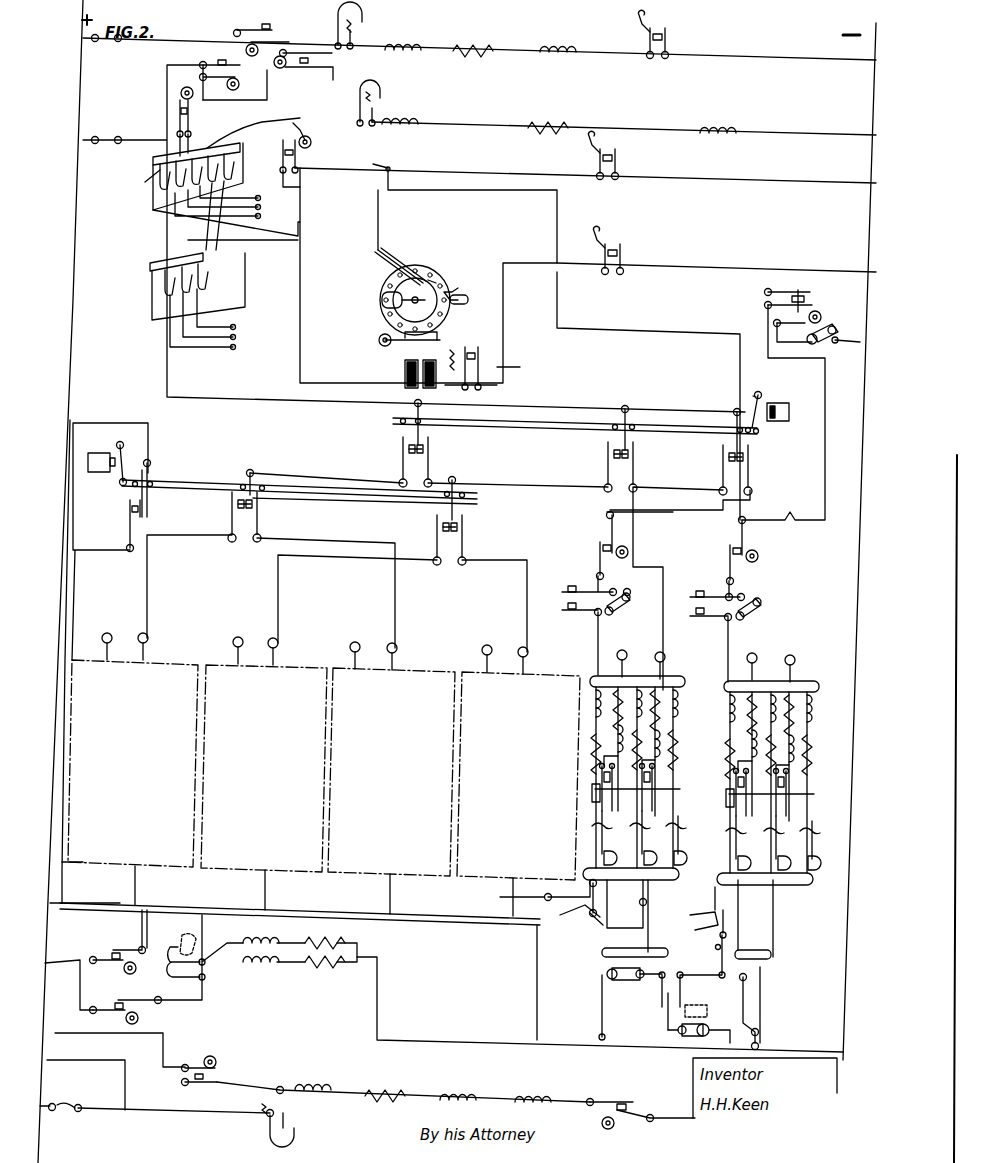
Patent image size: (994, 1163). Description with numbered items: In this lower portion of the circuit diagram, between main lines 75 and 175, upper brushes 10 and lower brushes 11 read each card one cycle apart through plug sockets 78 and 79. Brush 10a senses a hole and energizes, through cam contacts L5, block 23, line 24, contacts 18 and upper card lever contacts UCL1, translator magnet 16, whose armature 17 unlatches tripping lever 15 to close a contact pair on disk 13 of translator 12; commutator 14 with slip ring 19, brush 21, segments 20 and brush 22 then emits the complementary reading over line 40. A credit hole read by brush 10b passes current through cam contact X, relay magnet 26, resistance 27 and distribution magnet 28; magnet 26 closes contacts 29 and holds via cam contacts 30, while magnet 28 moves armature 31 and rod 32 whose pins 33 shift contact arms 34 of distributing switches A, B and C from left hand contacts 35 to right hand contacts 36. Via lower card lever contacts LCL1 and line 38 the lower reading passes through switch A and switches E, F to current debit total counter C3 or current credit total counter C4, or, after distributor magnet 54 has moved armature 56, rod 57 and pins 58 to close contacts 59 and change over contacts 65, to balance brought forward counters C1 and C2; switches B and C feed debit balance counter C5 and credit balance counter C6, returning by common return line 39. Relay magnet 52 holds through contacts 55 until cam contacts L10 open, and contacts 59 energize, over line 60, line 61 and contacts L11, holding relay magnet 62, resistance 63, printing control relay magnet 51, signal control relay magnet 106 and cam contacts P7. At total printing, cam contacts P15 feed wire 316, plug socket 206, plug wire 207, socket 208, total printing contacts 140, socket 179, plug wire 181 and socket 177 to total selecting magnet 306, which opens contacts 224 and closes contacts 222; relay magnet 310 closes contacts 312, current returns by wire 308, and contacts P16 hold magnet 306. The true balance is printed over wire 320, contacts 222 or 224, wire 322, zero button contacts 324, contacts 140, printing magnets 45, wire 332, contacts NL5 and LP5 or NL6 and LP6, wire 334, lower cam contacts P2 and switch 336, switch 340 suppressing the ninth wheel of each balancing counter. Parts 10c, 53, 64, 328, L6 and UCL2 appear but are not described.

The upper set of card reading brushes 10 is at (153, 157).
The brush 10a is at (143, 182).
The brush 10b is at (226, 140).
The key relay lead 10c is at (274, 122).
The lower set of card reading brushes 11 is at (150, 265).
The translator 12 is at (393, 305).
The disk 13 is at (450, 290).
The commutator 14 is at (392, 292).
The contact tripping lever 15 is at (428, 336).
The translator magnet 16 is at (402, 375).
The armature 17 is at (380, 338).
The contacts 18 is at (489, 368).
The slip ring 19 is at (432, 280).
The insulated segments 20 is at (440, 282).
The brush 21 is at (380, 258).
The brush 22 is at (398, 262).
The block 23 is at (211, 258).
The line 24 is at (302, 232).
The relay magnet 26 is at (405, 118).
The resistance 27 is at (548, 122).
The distribution magnet 28 is at (791, 392).
The contacts 29 is at (382, 95).
The cam contacts 30 is at (224, 60).
The armature 31 is at (754, 392).
The rod 32 is at (690, 425).
The pins 33 is at (633, 408).
The movable contact arms 34 is at (675, 437).
The left hand contact 35 is at (723, 465).
The right hand contact 36 is at (768, 466).
The line 38 is at (390, 160).
The common return line 39 is at (330, 898).
The line 40 is at (640, 331).
The printing magnets 45 is at (770, 695).
The printing control relay magnet 51 is at (465, 1094).
The relay magnet 52 is at (400, 46).
The resistor 53 is at (473, 41).
The distributor magnet 54 is at (99, 452).
The relay contacts 55 is at (364, 16).
The armature 56 is at (128, 460).
The rod 57 is at (200, 484).
The pins 58 is at (150, 488).
The contacts 59 is at (128, 498).
The line 60 is at (53, 870).
The line 61 is at (53, 887).
The holding relay magnet 62 is at (318, 1085).
The resistance 63 is at (385, 1090).
The relay 64 is at (296, 1122).
The contacts 65 is at (345, 504).
The main line 75 is at (40, 1128).
The plug sockets 78 is at (262, 216).
The plug sockets 79 is at (236, 347).
The signal control relay magnet 106 is at (545, 1095).
The total printing contacts 140 is at (790, 815).
The main line 175 is at (843, 922).
The socket 177 is at (639, 902).
The socket 179 is at (645, 805).
The plug wire 181 is at (650, 843).
The plug socket 206 is at (526, 892).
The plug wire 207 is at (582, 855).
The plug socket 208 is at (582, 838).
The contacts 222 is at (716, 948).
The contacts 224 is at (660, 1015).
The total selecting magnet 306 is at (695, 995).
The wire 308 is at (380, 985).
The relay magnet 310 is at (182, 930).
The contacts 312 is at (160, 975).
The wire 316 is at (60, 960).
The wire 320 is at (725, 1028).
The wire 322 is at (700, 972).
The zero button contacts 324 is at (710, 918).
The coil 328 is at (790, 738).
The wire 332 is at (726, 633).
The wire 334 is at (680, 512).
The switch 336 is at (834, 345).
The switch 340 is at (730, 790).
The distributing switch A is at (428, 455).
The distributing switch B is at (608, 475).
The distributing switch C is at (740, 475).
The distributing switch E is at (250, 522).
The distributing switch F is at (455, 540).
The cam contact X is at (306, 161).
The debit balance brought forward counter C1 is at (133, 769).
The credit balance brought forward counter C2 is at (264, 773).
The current debit total counter C3 is at (391, 778).
The current credit total counter C4 is at (518, 780).
The debit balance counter C5 is at (639, 765).
The credit balance counter C6 is at (772, 769).
The cam contacts L5 is at (196, 105).
The relay L6 is at (303, 71).
The cam contacts L10 is at (272, 30).
The cam controlled contacts L11 is at (217, 1076).
The contacts LP5 is at (598, 546).
The contacts LP6 is at (733, 551).
The contacts NL5 is at (588, 622).
The contacts NL6 is at (720, 596).
The lower cam contacts P2 is at (803, 307).
The cam contacts P7 is at (655, 1090).
The cam contacts P15 is at (118, 940).
The contacts P16 is at (155, 1010).
The upper card lever contacts UCL1 is at (623, 232).
The relay UCL2 is at (670, 22).
The lower card lever contacts LCL1 is at (618, 147).